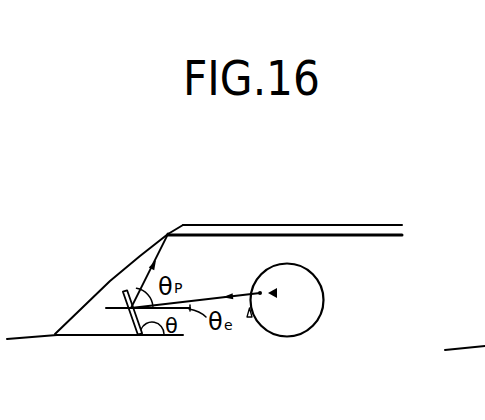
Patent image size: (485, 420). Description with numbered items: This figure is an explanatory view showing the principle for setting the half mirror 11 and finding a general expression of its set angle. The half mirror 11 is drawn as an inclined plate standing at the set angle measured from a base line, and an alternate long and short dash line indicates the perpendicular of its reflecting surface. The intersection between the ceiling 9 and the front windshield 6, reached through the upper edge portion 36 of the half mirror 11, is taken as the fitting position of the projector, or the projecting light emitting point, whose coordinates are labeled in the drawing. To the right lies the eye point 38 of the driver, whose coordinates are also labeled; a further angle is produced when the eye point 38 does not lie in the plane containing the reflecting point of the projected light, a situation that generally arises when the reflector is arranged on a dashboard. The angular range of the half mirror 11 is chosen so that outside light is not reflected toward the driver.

The front windshield 6 is at (75, 312).
The ceiling 9 is at (299, 233).
The half mirror 11 is at (122, 300).
The upper edge portion 36 is at (168, 234).
The eye point 38 is at (278, 300).